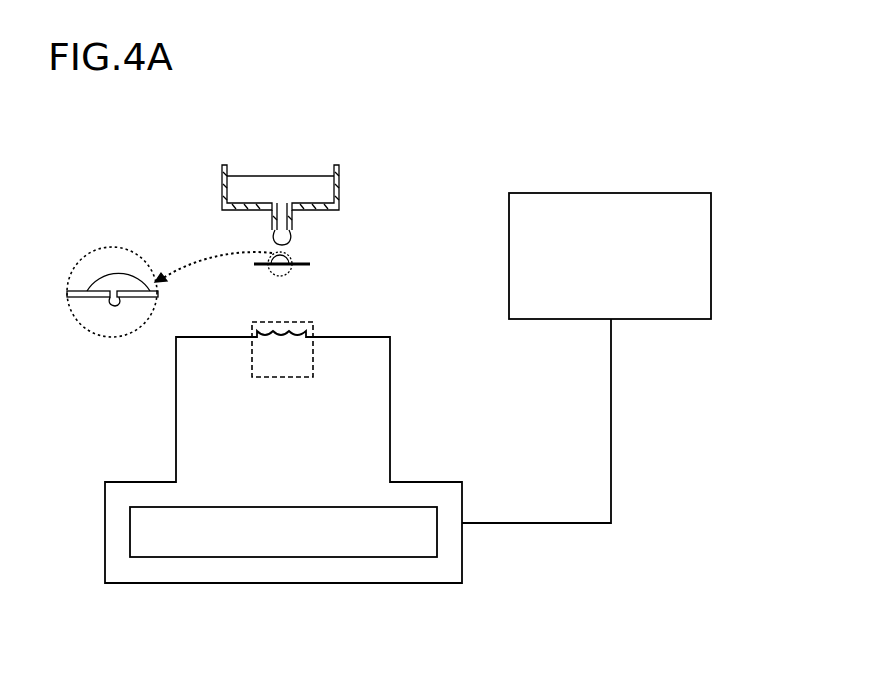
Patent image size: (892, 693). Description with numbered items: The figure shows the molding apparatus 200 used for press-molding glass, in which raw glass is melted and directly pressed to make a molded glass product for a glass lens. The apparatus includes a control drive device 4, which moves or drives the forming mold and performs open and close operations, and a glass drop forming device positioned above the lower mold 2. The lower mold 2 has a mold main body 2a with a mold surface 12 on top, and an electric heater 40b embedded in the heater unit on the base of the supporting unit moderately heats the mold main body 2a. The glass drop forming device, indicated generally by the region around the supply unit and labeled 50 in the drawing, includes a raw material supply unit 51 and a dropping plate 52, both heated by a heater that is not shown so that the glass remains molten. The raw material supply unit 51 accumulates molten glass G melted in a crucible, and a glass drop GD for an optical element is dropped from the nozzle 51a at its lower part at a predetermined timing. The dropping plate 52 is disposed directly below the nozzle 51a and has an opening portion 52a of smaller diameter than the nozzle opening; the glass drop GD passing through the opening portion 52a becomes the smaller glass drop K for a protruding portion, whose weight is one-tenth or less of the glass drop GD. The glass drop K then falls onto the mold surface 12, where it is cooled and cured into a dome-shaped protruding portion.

The molding apparatus 200 is at (657, 131).
The control drive device 4 is at (606, 221).
The lower mold 2 is at (400, 408).
The mold main body 2a is at (258, 379).
The mold surface 12 is at (306, 332).
The electric heater 40b is at (250, 545).
The dispenser 50 is at (288, 179).
The raw material supply unit 51 is at (340, 186).
The nozzle 51a is at (294, 222).
The dropping plate 52 is at (311, 264).
The opening portion 52a is at (112, 303).
The molten glass G is at (276, 180).
The glass drop for an optical element GD is at (273, 236).
The glass drop for a protruding portion K is at (288, 268).